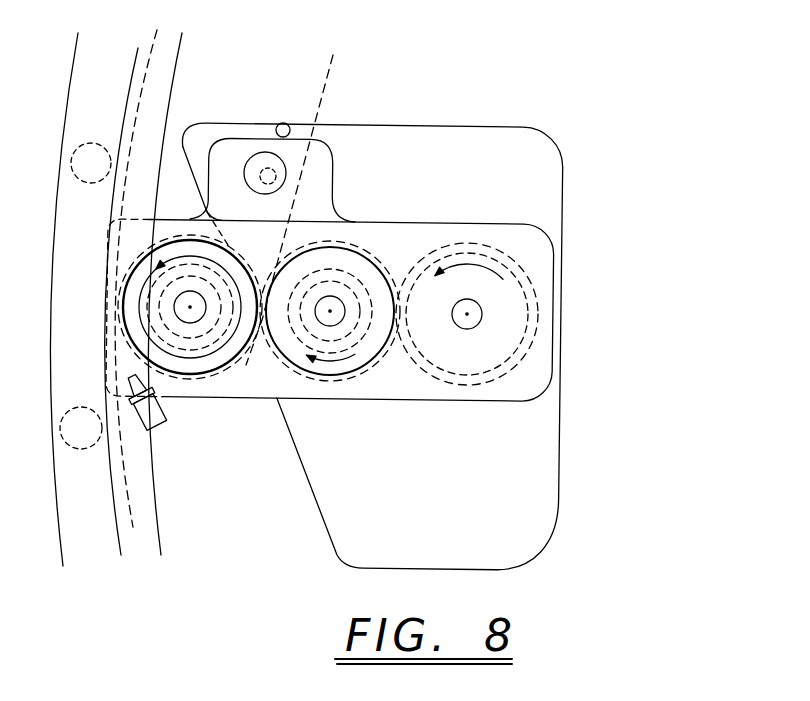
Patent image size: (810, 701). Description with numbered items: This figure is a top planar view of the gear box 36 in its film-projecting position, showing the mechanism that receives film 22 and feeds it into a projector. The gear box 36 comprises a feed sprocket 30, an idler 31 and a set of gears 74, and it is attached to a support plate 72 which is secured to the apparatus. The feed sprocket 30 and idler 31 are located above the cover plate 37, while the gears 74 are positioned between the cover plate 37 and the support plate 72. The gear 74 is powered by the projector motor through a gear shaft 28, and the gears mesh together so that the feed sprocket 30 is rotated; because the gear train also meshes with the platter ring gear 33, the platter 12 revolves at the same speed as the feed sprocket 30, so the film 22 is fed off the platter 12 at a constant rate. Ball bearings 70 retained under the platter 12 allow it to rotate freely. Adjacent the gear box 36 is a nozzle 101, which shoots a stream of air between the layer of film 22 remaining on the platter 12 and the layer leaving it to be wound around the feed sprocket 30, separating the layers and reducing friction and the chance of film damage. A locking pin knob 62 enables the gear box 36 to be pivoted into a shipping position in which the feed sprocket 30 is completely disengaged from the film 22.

The platter 12 is at (87, 80).
The film 22 is at (155, 30).
The ball bearings 70 is at (89, 143).
The support plate 72 is at (563, 193).
The cover plate 37 is at (495, 222).
The locking pin knob 62 is at (258, 173).
The feed sprocket 30 is at (212, 353).
The idler 31 is at (353, 355).
The gear shaft 28 is at (478, 329).
The gear 74 is at (541, 325).
The gear box 36 is at (612, 250).
The platter ring gear 33 is at (152, 440).
The nozzle 101 is at (132, 381).